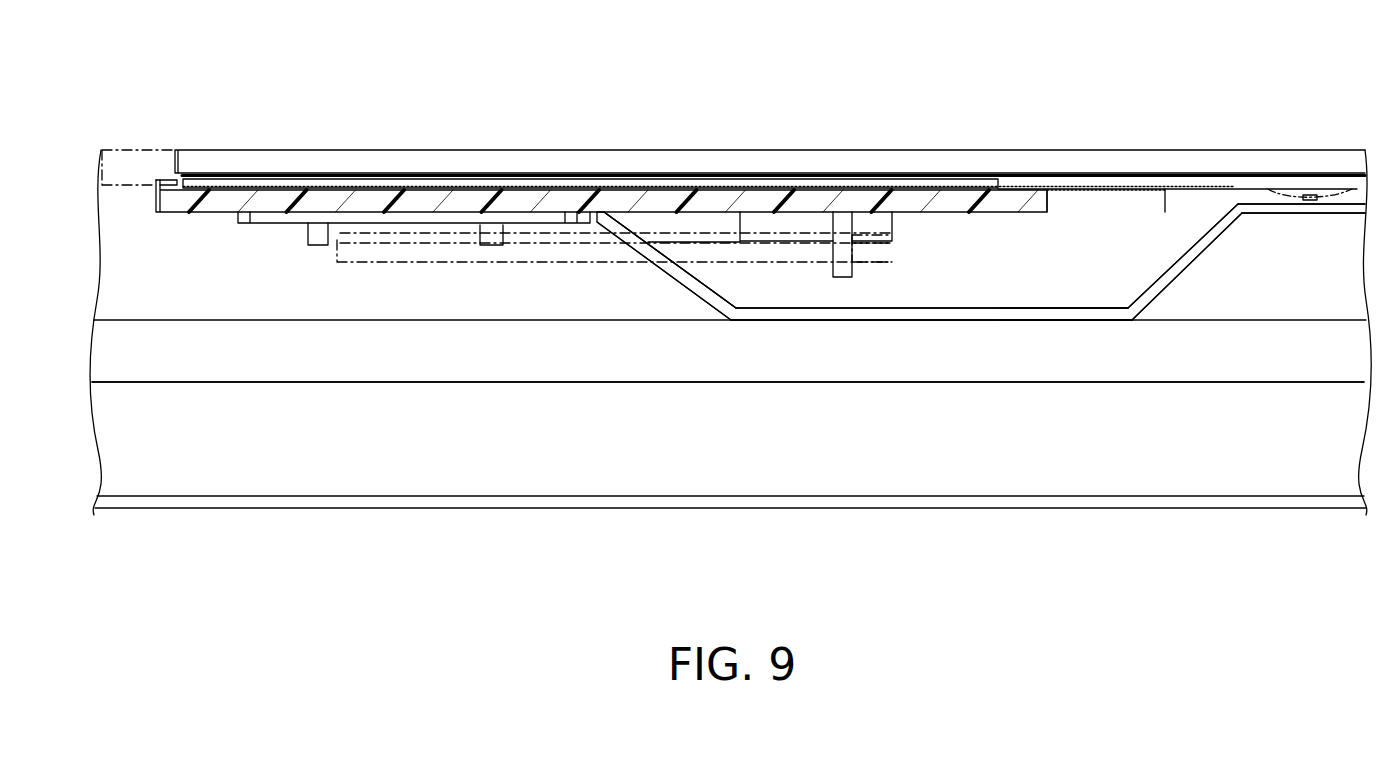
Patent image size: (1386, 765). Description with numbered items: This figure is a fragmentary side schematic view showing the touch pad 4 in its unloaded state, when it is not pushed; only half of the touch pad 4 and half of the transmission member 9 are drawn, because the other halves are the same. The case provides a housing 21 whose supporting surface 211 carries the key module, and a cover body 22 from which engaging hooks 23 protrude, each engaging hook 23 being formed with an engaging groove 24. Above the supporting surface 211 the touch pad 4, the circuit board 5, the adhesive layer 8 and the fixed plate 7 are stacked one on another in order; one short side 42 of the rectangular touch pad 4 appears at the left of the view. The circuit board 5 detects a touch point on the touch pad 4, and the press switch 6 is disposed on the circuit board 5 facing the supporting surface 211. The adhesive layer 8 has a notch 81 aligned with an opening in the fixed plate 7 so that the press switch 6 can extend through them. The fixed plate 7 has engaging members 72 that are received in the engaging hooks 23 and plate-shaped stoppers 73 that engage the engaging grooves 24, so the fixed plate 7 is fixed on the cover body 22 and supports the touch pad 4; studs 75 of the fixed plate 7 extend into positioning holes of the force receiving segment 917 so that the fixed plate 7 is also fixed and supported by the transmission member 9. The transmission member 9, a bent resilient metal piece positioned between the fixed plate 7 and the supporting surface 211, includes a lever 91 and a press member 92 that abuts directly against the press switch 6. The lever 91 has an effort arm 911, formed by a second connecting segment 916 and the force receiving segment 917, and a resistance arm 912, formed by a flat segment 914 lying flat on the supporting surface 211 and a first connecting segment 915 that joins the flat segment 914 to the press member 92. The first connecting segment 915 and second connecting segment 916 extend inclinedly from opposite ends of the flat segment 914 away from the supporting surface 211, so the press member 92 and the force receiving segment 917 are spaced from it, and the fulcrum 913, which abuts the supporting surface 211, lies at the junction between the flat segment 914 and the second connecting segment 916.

The touch pad 4 is at (1250, 146).
The circuit board 5 is at (258, 180).
The press switch 6 is at (1308, 194).
The fixed plate 7 is at (187, 220).
The adhesive layer 8 is at (921, 184).
The transmission member 9 is at (947, 334).
The housing 21 is at (1060, 455).
The cover body 22 is at (117, 157).
The engaging hook 23 is at (352, 256).
The engaging groove 24 is at (855, 252).
The short side 42 is at (172, 165).
The engaging member 72 is at (700, 222).
The plate-shaped stopper 73 is at (845, 225).
The stud 75 is at (318, 234).
The notch 81 is at (1073, 187).
The lever 91 is at (686, 298).
The press member 92 is at (1267, 210).
The supporting surface 211 is at (980, 350).
The effort arm 911 is at (720, 275).
The resistance arm 912 is at (980, 306).
The fulcrum 913 is at (738, 322).
The flat segment 914 is at (1033, 316).
The first connecting segment 915 is at (1180, 262).
The second connecting segment 916 is at (675, 277).
The force receiving segment 917 is at (366, 216).